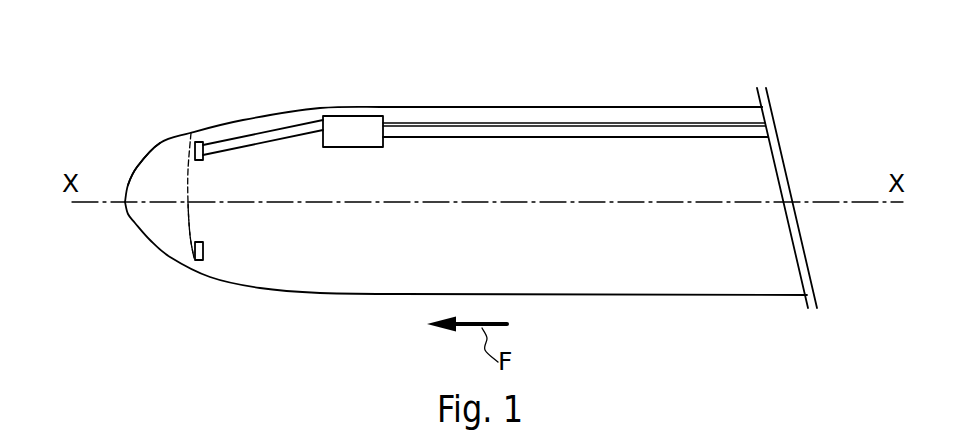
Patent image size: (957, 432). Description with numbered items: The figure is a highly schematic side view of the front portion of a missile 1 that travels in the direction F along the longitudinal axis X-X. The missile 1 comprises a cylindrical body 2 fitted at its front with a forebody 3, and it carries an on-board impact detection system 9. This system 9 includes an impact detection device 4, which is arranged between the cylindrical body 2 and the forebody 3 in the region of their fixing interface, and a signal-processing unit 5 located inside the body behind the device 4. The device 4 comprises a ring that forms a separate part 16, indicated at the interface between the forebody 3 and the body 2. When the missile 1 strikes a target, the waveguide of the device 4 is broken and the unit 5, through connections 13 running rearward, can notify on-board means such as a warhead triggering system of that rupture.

The missile 1 is at (472, 211).
The cylindrical body 2 is at (572, 107).
The forebody 3 is at (135, 157).
The impact detection device 4 is at (190, 130).
The signal-processing unit 5 is at (350, 117).
The impact detection system 9 is at (425, 100).
The connections 13 is at (730, 122).
The separate part 16 is at (185, 222).